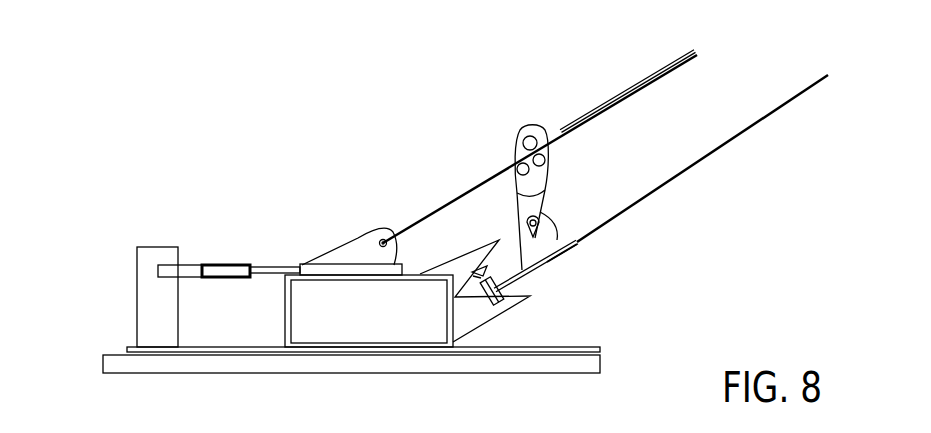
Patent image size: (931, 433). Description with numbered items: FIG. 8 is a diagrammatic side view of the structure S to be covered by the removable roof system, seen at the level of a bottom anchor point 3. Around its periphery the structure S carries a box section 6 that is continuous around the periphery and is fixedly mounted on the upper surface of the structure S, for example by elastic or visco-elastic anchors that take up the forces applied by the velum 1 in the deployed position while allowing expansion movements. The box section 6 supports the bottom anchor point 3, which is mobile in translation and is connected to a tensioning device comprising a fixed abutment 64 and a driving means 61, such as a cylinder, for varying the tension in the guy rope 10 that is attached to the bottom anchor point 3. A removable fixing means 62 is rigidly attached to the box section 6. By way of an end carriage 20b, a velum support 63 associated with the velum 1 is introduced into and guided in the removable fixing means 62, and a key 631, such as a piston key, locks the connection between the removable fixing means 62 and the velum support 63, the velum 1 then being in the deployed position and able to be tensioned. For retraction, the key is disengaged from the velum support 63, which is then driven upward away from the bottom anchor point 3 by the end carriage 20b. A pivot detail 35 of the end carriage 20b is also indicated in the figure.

The velum 1 is at (680, 173).
The guy rope 10 is at (633, 90).
The end carriage 20b is at (515, 146).
The bottom anchor point 3 is at (359, 239).
The pivot pin 35 is at (538, 203).
The box section 6 is at (332, 323).
The driving means 61 is at (223, 265).
The removable fixing means 62 is at (480, 317).
The velum support 63 is at (540, 266).
The key 631 is at (495, 300).
The fixed abutment 64 is at (150, 303).
The structure S is at (120, 363).